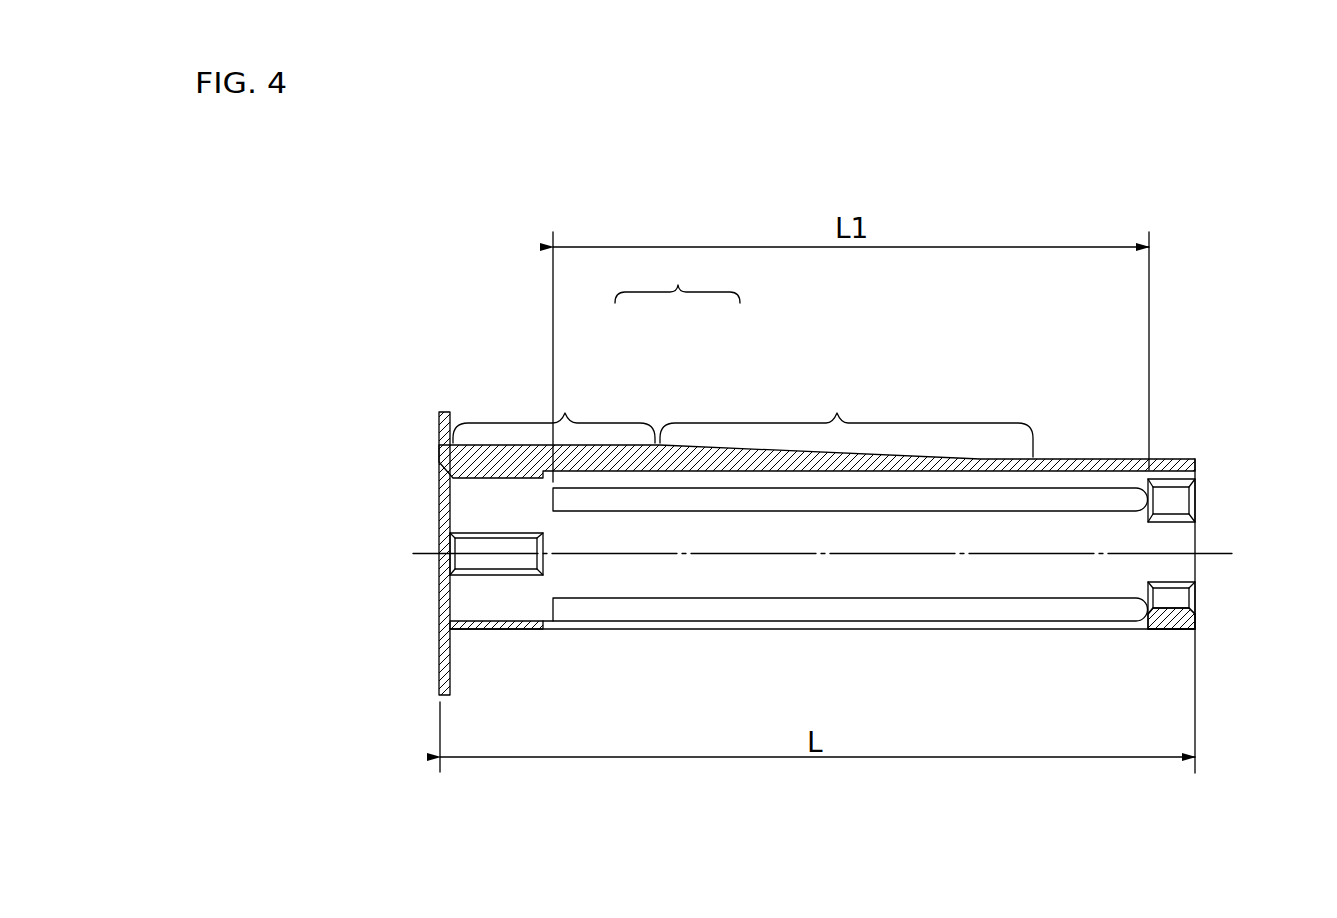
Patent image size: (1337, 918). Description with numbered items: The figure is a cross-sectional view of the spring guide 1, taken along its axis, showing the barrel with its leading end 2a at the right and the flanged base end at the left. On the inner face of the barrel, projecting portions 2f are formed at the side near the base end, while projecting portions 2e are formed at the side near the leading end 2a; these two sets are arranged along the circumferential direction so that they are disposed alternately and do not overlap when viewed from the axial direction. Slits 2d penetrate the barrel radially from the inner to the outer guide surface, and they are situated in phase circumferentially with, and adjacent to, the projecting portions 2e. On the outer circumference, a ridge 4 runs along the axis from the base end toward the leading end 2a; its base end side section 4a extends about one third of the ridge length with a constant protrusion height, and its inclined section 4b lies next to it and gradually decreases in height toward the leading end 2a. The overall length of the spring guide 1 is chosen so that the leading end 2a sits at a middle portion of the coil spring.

The spring guide 1 is at (818, 361).
The leading end 2a is at (1197, 567).
The slit 2d is at (880, 500).
The projecting portion 2e is at (973, 457).
The projecting portion 2f is at (475, 488).
The ridge 4 is at (677, 277).
The base end side section 4a is at (565, 413).
The inclined section 4b is at (837, 413).